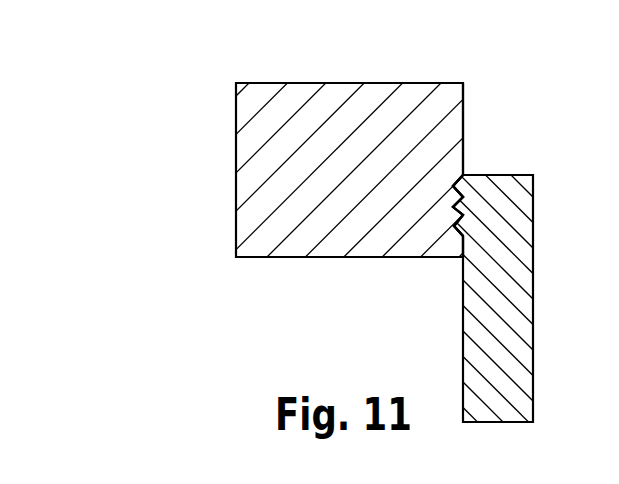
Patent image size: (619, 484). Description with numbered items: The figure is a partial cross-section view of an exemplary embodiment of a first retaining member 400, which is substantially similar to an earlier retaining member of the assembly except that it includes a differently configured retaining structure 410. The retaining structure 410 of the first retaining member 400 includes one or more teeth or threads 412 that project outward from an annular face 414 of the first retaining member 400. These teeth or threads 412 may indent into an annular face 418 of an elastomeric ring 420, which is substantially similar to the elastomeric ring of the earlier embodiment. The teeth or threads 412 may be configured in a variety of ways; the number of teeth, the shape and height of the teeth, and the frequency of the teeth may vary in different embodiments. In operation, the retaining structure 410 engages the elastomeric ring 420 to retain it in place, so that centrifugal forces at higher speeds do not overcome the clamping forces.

The first retaining member 400 is at (507, 263).
The retaining structure 410 is at (428, 203).
The teeth or threads 412 is at (455, 190).
The annular face 414 is at (463, 243).
The annular face 418 is at (463, 102).
The elastomeric ring 420 is at (375, 95).